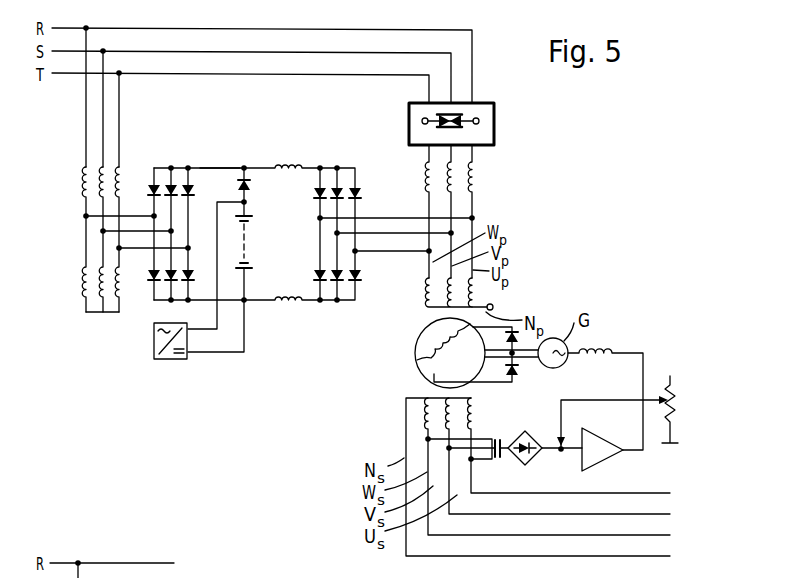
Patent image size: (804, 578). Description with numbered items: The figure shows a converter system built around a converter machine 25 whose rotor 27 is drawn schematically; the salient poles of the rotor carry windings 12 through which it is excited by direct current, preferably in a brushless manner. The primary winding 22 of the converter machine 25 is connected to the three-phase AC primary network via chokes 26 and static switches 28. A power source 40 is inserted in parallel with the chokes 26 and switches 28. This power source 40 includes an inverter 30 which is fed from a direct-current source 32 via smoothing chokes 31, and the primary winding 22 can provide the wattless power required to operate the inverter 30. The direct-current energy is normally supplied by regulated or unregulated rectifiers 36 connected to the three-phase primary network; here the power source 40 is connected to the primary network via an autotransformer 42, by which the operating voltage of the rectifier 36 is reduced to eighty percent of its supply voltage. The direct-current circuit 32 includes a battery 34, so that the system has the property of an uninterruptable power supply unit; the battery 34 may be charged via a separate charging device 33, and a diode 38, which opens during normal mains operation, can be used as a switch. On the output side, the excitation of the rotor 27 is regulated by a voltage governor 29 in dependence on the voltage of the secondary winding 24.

The windings 12 is at (469, 353).
The primary winding 22 is at (428, 297).
The secondary winding 24 is at (428, 419).
The converter machine 25 is at (504, 307).
The chokes 26 is at (474, 178).
The rotor 27 is at (417, 345).
The static switches 28 is at (480, 132).
The voltage governor 29 is at (600, 457).
The inverter 30 is at (335, 165).
The smoothing chokes 31 is at (288, 165).
The direct-current source 32 is at (244, 165).
The charging device 33 is at (172, 361).
The battery 34 is at (247, 245).
The rectifiers 36 is at (172, 165).
The diode 38 is at (252, 186).
The power source 40 is at (214, 165).
The autotransformer 42 is at (80, 283).